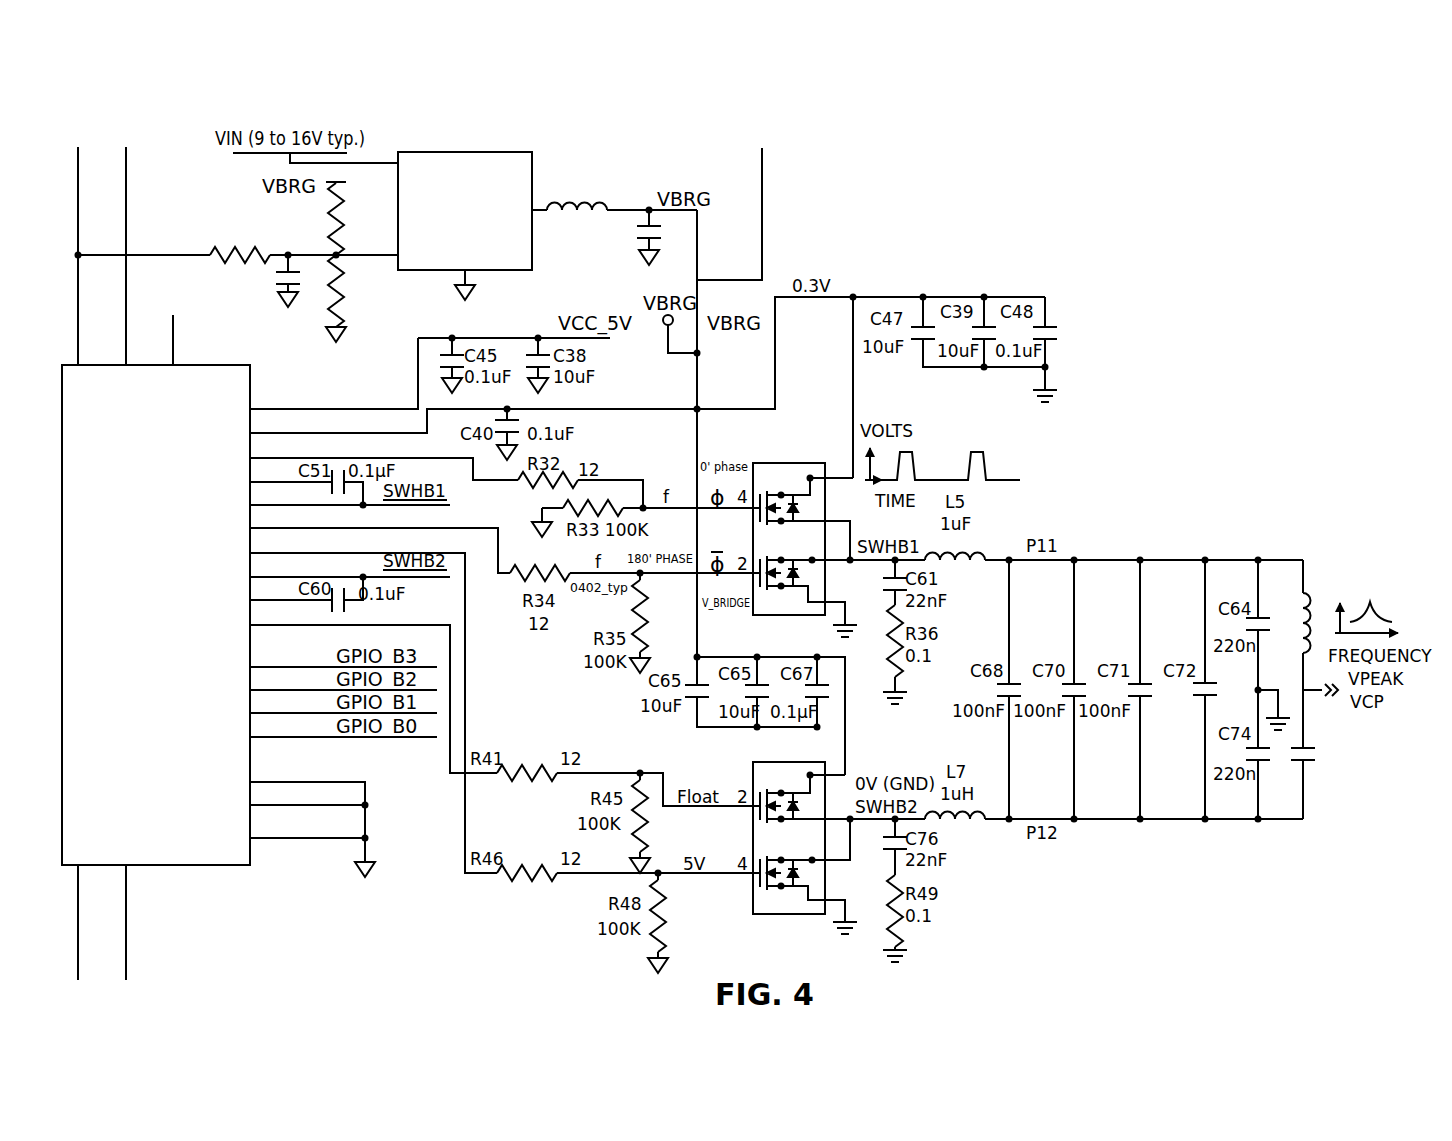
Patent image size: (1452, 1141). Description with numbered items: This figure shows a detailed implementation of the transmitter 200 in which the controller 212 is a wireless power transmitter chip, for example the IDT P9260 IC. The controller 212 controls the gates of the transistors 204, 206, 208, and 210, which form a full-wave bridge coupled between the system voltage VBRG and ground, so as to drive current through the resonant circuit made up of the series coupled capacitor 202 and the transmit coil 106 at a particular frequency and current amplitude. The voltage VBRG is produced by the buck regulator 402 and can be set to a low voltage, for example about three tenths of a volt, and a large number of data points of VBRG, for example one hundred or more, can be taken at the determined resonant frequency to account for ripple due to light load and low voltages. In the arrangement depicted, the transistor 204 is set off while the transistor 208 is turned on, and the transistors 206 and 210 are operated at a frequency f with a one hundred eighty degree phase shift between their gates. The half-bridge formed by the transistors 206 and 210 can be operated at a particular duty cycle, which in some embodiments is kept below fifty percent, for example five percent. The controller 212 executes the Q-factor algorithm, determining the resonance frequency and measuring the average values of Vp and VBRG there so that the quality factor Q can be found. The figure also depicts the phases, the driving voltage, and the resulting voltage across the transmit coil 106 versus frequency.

The transmitter 200 is at (1252, 228).
The controller 212 is at (118, 685).
The buck regulator 402 is at (488, 175).
The transistor 206 is at (748, 536).
The transistor 210 is at (757, 592).
The transistor 204 is at (747, 846).
The transistor 208 is at (760, 890).
The transmit coil 106 is at (1305, 620).
The capacitor 202 is at (1275, 733).